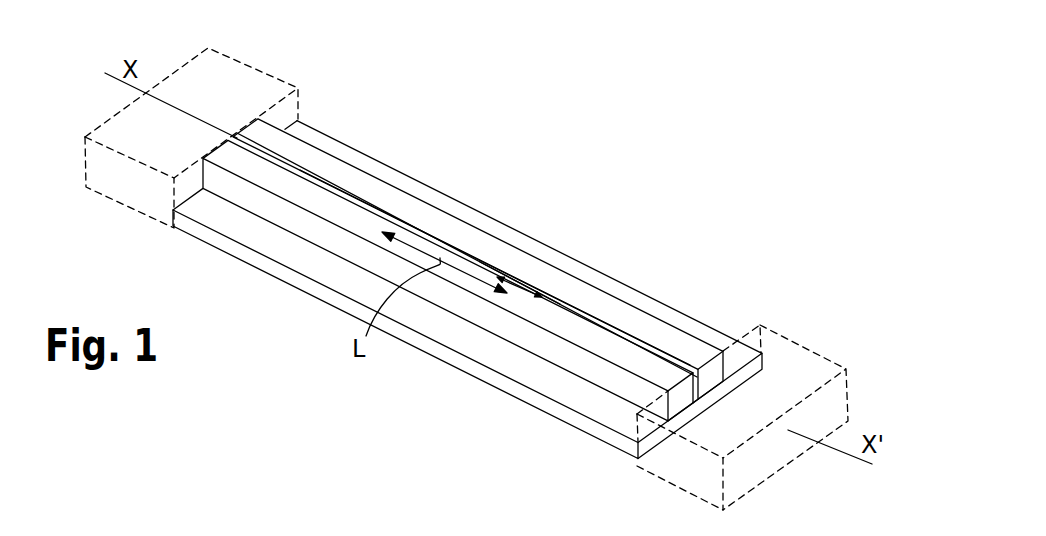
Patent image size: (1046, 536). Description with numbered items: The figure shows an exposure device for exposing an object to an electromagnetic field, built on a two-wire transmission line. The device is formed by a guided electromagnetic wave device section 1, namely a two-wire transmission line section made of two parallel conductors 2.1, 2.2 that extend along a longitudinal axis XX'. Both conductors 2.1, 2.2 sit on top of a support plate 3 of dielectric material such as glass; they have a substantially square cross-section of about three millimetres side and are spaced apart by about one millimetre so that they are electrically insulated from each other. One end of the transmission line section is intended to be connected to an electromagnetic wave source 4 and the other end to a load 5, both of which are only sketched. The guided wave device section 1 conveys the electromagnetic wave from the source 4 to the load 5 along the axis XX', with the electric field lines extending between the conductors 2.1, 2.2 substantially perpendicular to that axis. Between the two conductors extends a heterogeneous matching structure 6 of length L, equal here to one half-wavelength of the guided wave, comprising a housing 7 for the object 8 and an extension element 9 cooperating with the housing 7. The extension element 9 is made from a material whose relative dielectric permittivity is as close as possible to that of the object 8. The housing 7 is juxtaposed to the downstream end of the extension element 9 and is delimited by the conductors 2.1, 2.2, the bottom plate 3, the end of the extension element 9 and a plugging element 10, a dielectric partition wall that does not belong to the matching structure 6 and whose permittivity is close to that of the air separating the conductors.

The guided electromagnetic wave device section 1 is at (467, 293).
The conductor 2.1 is at (609, 353).
The conductor 2.2 is at (603, 304).
The support plate 3 is at (602, 432).
The electromagnetic wave source 4 is at (226, 92).
The load 5 is at (823, 401).
The heterogeneous matching structure 6 is at (467, 250).
The housing 7 is at (535, 291).
The object 8 is at (515, 270).
The extension element 9 is at (443, 246).
The plugging element 10 is at (545, 293).